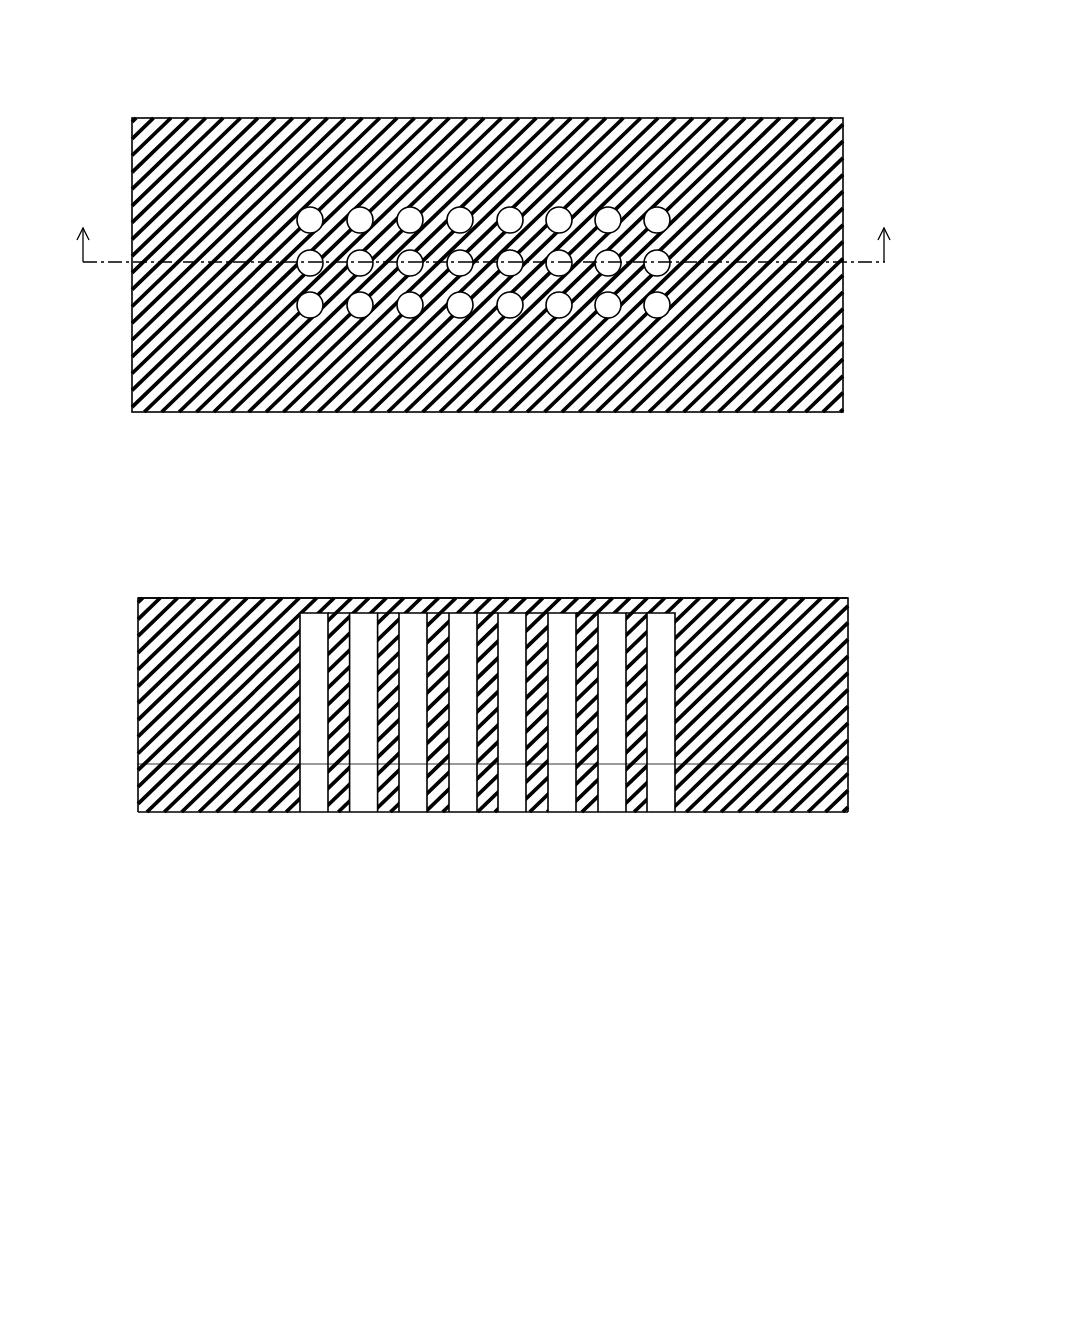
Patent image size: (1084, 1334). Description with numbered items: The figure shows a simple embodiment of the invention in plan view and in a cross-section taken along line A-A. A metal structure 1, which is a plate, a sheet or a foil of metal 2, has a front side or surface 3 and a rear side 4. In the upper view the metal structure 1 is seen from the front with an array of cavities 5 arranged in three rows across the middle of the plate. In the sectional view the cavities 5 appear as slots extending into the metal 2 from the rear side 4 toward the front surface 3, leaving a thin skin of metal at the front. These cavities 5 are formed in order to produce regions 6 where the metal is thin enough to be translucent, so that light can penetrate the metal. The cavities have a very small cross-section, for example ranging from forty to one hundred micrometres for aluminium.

The metal structure 1 is at (142, 99).
The metal 2 is at (772, 378).
The front side or surface 3 is at (252, 594).
The rear side 4 is at (260, 815).
The cavities 5 is at (360, 225).
The regions 6 is at (412, 606).